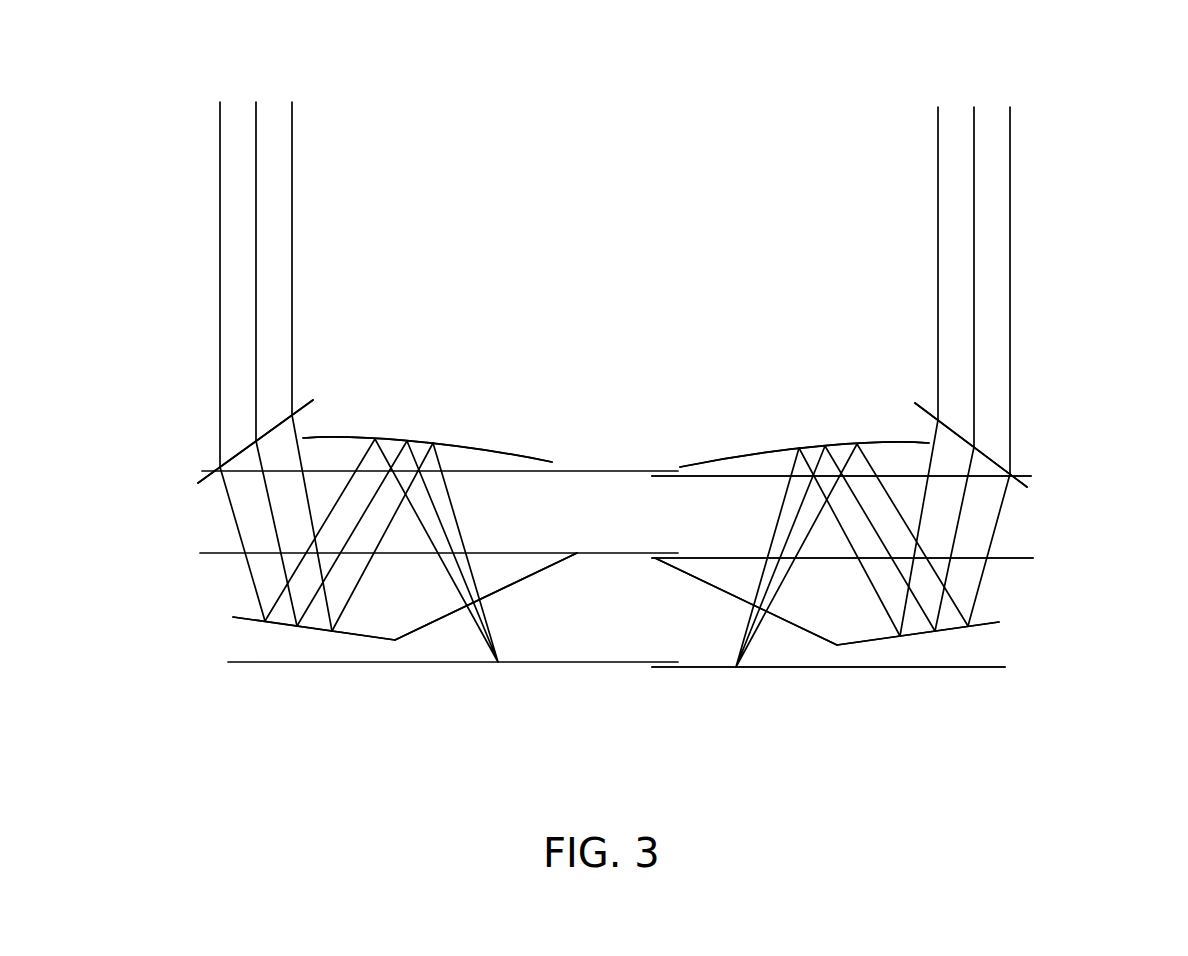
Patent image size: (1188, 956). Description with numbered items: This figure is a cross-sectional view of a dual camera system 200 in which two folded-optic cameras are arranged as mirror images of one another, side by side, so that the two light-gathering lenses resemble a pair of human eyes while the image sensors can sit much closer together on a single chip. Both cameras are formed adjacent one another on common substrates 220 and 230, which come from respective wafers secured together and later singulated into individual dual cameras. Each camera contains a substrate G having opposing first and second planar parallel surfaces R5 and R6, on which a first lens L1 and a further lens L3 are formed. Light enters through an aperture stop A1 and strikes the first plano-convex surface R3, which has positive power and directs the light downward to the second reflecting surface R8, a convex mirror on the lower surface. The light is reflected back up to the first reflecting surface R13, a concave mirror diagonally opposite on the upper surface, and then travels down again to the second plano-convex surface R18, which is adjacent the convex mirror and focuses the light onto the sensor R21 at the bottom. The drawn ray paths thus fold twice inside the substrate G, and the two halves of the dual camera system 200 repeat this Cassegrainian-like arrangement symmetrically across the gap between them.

The dual camera system 200 is at (870, 73).
The common substrate 220 is at (1063, 503).
The common substrate 230 is at (1010, 698).
The aperture stop A1 is at (305, 407).
The first plano-convex surface R3 is at (242, 449).
The first planar parallel surface R5 is at (243, 477).
The second planar parallel surface R6 is at (258, 557).
The second reflecting surface R8 is at (280, 623).
The first reflecting surface R13 is at (487, 445).
The second plano-convex surface R18 is at (538, 580).
The sensor R21 is at (540, 665).
The first lens L1 is at (349, 448).
The third lens L3 is at (390, 617).
The substrate G is at (526, 506).